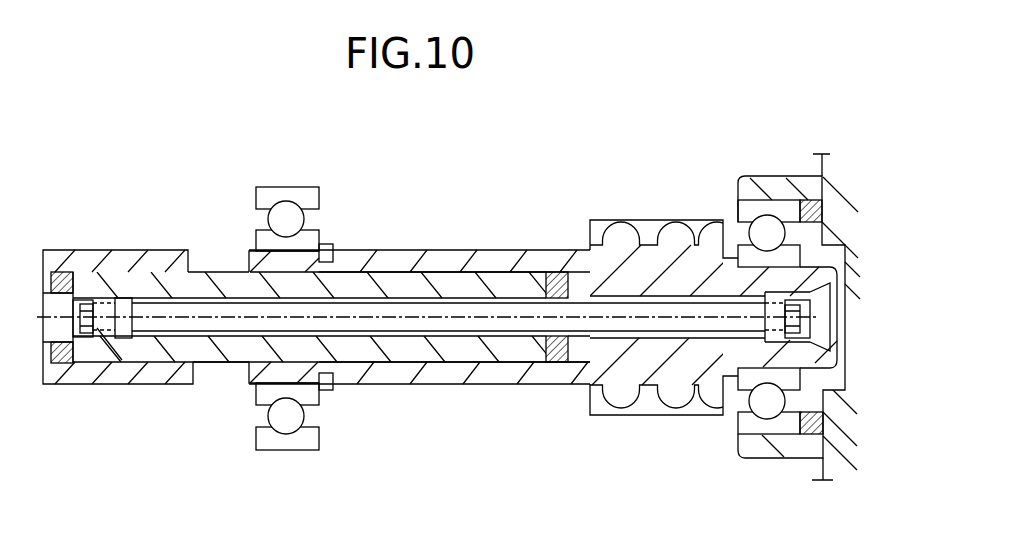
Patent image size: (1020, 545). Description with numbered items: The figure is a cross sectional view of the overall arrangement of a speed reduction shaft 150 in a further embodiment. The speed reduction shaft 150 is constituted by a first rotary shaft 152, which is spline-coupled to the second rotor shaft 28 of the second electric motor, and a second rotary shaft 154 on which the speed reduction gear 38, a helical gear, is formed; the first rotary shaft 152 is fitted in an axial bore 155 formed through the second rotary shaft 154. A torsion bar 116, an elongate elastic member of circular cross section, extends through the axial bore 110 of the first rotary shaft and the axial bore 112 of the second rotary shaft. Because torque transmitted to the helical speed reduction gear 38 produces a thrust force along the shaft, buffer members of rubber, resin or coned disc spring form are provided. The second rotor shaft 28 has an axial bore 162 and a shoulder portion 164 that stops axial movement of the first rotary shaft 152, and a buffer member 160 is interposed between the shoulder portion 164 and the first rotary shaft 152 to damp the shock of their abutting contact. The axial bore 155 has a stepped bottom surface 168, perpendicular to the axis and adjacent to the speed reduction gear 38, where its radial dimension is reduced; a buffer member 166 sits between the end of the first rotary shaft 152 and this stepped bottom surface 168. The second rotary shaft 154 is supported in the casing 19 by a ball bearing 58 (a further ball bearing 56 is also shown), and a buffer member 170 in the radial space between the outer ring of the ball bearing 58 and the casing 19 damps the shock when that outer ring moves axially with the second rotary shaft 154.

The casing 19 is at (838, 200).
The second rotor shaft 28 is at (112, 262).
The speed reduction gear 38 is at (620, 237).
The bearing 56 is at (284, 218).
The ball bearing 58 is at (767, 230).
The axial bore of the first rotary shaft 110 is at (382, 330).
The axial bore of the second rotary shaft 112 is at (663, 323).
The torsion bar 116 is at (357, 315).
The speed reduction shaft 150 is at (401, 182).
The first rotary shaft 152 is at (215, 260).
The second rotary shaft 154 is at (421, 243).
The axial bore 155 is at (413, 347).
The buffer member 160 is at (67, 362).
The axial bore 162 is at (128, 346).
The shoulder portion 164 is at (60, 258).
The buffer member 166 is at (560, 362).
The stepped bottom surface 168 is at (548, 272).
The buffer member 170 is at (800, 435).